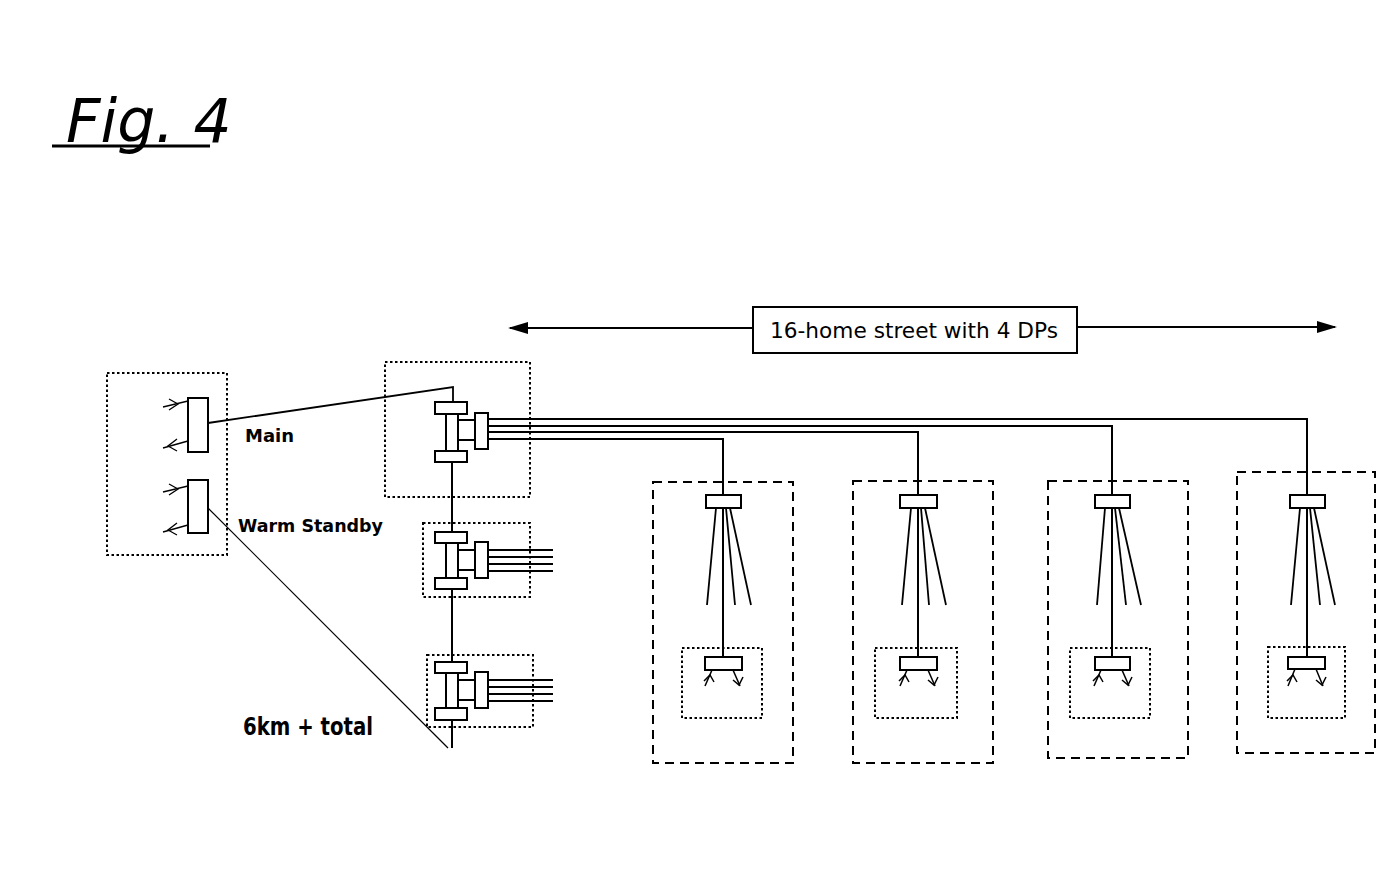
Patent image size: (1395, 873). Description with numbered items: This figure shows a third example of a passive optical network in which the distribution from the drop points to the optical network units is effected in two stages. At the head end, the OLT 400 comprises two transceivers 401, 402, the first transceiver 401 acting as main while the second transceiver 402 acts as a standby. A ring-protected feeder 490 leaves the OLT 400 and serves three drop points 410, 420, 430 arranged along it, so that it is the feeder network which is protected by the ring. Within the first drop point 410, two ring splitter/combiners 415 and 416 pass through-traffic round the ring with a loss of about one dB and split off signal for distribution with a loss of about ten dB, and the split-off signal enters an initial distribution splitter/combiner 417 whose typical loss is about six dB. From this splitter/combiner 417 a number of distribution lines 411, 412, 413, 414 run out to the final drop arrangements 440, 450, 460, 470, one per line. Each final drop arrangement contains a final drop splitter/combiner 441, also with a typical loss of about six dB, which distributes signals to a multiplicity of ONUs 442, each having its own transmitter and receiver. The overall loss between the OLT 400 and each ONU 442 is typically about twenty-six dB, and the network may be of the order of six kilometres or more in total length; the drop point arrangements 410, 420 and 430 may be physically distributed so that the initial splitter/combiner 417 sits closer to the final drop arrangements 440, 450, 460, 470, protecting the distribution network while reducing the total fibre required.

The OLT 400 is at (167, 453).
The first transceiver 401 is at (189, 414).
The second transceiver 402 is at (190, 517).
The drop point 410 is at (457, 419).
The distribution line 411 is at (605, 467).
The distribution line 412 is at (703, 463).
The distribution line 413 is at (800, 460).
The distribution line 414 is at (897, 457).
The ring splitter/combiner 415 is at (432, 410).
The ring splitter/combiner 416 is at (432, 458).
The initial distribution splitter/combiner 417 is at (498, 442).
The drop point 420 is at (488, 550).
The drop point 430 is at (490, 679).
The final drop arrangement 440 is at (723, 637).
The final drop splitter/combiner 441 is at (747, 572).
The ONU 442 is at (722, 697).
The final drop arrangement 450 is at (923, 635).
The final drop arrangement 460 is at (1118, 632).
The final drop arrangement 470 is at (1306, 626).
The ring-protected feeder 490 is at (330, 566).